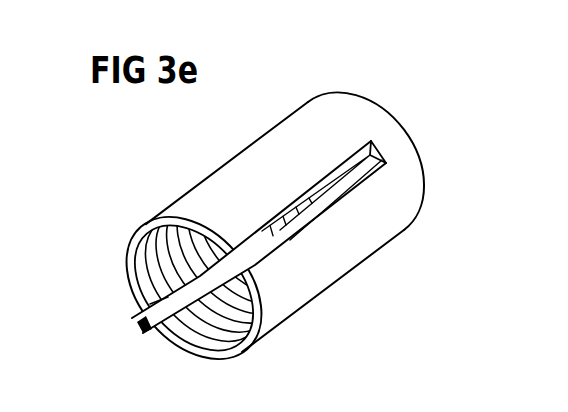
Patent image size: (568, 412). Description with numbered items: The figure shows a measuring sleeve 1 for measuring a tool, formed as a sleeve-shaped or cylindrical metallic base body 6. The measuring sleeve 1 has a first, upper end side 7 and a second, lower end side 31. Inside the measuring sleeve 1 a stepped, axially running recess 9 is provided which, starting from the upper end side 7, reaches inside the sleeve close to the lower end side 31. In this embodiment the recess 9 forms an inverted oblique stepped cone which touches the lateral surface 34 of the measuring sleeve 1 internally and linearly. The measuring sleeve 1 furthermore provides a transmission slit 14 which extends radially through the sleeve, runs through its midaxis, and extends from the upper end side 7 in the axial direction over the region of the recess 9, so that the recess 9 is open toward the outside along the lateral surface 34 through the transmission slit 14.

The measuring sleeve 1 is at (460, 94).
The base body 6 is at (300, 134).
The upper end side 7 is at (104, 289).
The recess 9 is at (170, 346).
The transmission slit 14 is at (165, 313).
The lower end side 31 is at (440, 150).
The lateral surface 34 is at (254, 192).